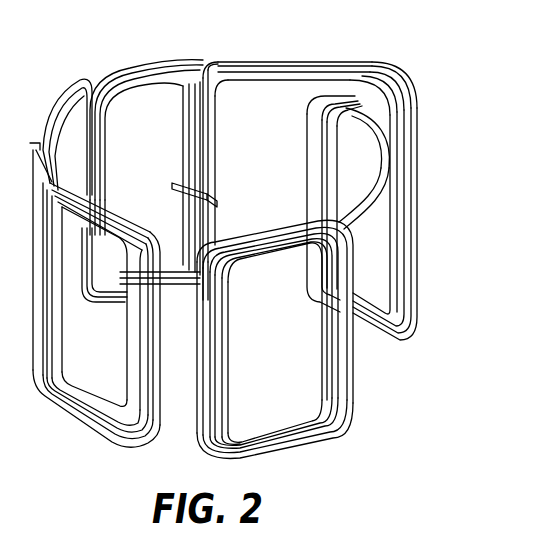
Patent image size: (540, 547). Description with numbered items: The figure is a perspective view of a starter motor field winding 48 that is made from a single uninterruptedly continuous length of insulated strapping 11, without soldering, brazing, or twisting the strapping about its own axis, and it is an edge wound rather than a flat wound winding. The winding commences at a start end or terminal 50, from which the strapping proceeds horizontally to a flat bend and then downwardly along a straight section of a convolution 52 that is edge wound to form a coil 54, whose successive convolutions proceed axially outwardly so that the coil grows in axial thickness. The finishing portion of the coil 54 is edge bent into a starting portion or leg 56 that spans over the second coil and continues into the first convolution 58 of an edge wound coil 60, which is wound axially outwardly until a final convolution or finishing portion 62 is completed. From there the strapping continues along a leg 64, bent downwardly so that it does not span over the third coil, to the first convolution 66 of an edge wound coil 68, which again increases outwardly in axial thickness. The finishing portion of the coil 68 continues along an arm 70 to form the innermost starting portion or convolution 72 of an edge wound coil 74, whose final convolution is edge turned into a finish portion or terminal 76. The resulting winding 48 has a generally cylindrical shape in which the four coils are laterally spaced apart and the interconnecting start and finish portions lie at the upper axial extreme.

The insulated strapping 11 is at (256, 52).
The winding 48 is at (143, 48).
The start end or terminal 50 is at (178, 183).
The convolution 52 is at (200, 333).
The coil 54 is at (362, 393).
The starting portion or leg 56 is at (371, 205).
The first convolution 58 is at (358, 118).
The edge wound coil 60 is at (422, 218).
The final convolution or finishing portion 62 is at (401, 99).
The leg 64 is at (293, 60).
The first convolution 66 is at (212, 103).
The edge wound coil 68 is at (222, 164).
The arm 70 is at (76, 84).
The innermost starting portion or convolution 72 is at (72, 328).
The edge wound coil 74 is at (52, 412).
The finish portion or terminal 76 is at (30, 157).